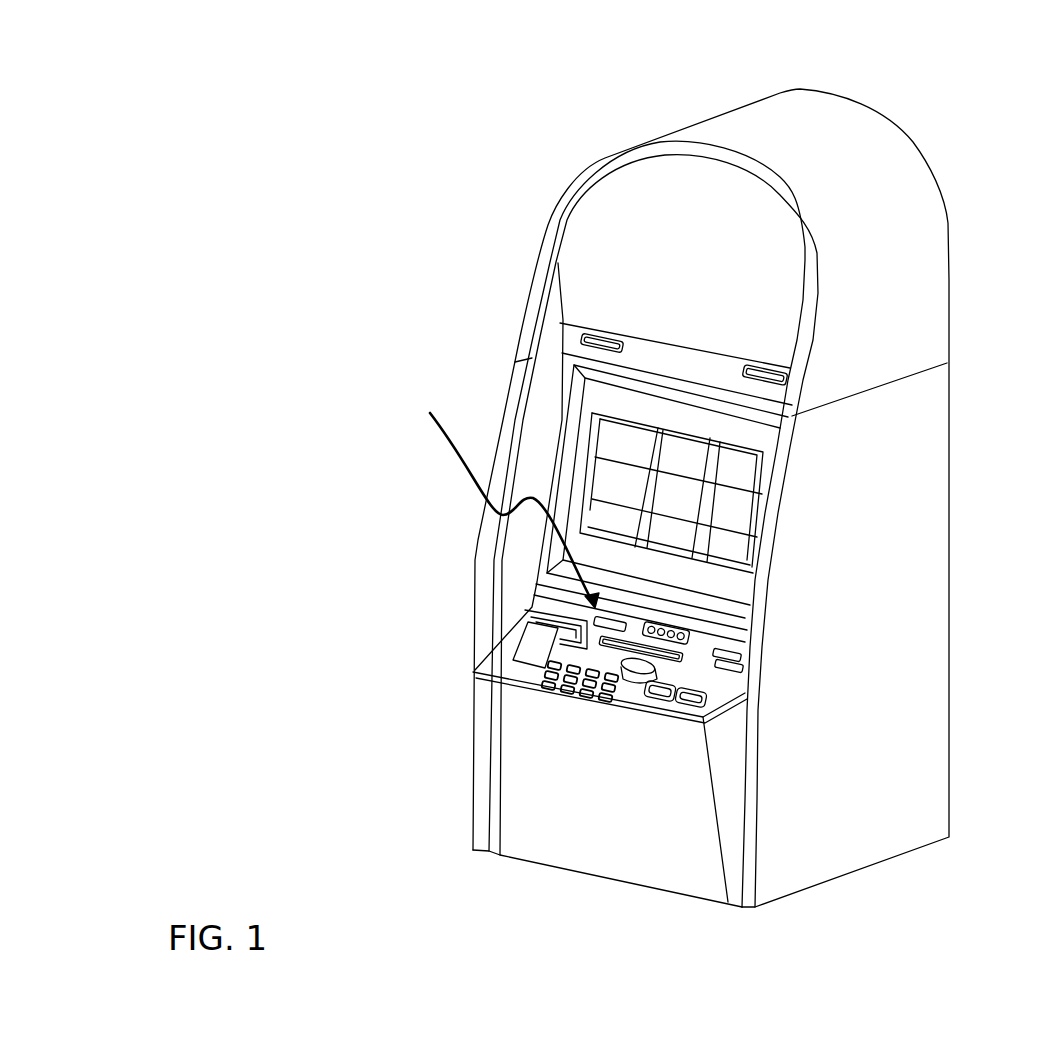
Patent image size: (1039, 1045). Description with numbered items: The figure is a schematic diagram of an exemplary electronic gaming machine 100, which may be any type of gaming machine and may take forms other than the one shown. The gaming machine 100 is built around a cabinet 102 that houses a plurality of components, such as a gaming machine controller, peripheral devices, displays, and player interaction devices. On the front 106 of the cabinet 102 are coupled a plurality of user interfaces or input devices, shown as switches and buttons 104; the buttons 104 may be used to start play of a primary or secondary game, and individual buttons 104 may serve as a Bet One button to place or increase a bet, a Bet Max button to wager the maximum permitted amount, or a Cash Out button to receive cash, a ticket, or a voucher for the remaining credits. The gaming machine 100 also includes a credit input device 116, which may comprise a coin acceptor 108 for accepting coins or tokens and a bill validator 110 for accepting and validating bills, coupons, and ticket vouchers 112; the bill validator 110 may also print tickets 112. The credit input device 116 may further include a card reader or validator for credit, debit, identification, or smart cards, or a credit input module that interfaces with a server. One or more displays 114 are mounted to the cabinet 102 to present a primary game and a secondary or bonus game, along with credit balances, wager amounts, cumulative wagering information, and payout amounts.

The gaming machine 100 is at (952, 52).
The cabinet 102 is at (898, 157).
The buttons 104 is at (566, 693).
The front 106 is at (570, 337).
The coin acceptor 108 is at (643, 678).
The bill validator 110 is at (522, 611).
The ticket voucher 112 is at (523, 650).
The displays 114 is at (737, 545).
The credit input device 116 is at (562, 535).